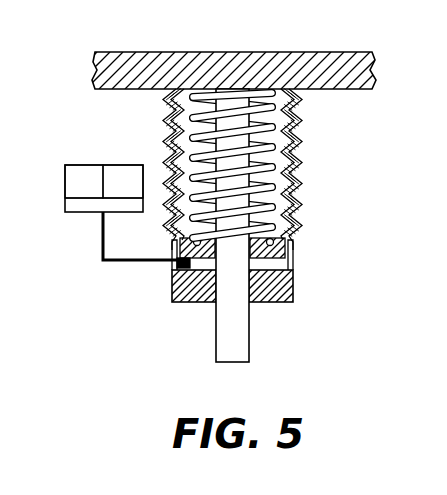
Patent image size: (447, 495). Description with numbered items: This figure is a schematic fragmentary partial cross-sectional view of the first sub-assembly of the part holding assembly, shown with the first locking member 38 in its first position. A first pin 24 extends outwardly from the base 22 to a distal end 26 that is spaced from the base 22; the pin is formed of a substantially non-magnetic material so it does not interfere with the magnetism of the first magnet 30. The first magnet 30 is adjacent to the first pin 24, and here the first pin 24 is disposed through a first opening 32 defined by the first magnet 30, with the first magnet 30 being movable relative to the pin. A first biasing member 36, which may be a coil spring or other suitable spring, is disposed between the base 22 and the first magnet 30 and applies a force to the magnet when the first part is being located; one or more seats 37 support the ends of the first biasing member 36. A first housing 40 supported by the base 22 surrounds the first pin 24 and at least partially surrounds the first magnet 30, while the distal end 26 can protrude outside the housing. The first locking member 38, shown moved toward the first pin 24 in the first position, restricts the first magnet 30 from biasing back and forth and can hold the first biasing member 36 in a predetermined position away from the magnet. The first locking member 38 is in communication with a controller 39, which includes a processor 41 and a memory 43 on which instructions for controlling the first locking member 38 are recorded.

The base 22 is at (229, 60).
The first pin 24 is at (272, 230).
The distal end 26 is at (250, 323).
The first magnet 30 is at (227, 308).
The first opening 32 is at (215, 289).
The first biasing member 36 is at (297, 128).
The seat 37 is at (292, 264).
The first locking member 38 is at (176, 264).
The controller 39 is at (98, 212).
The first housing 40 is at (300, 207).
The processor 41 is at (84, 181).
The memory 43 is at (123, 181).